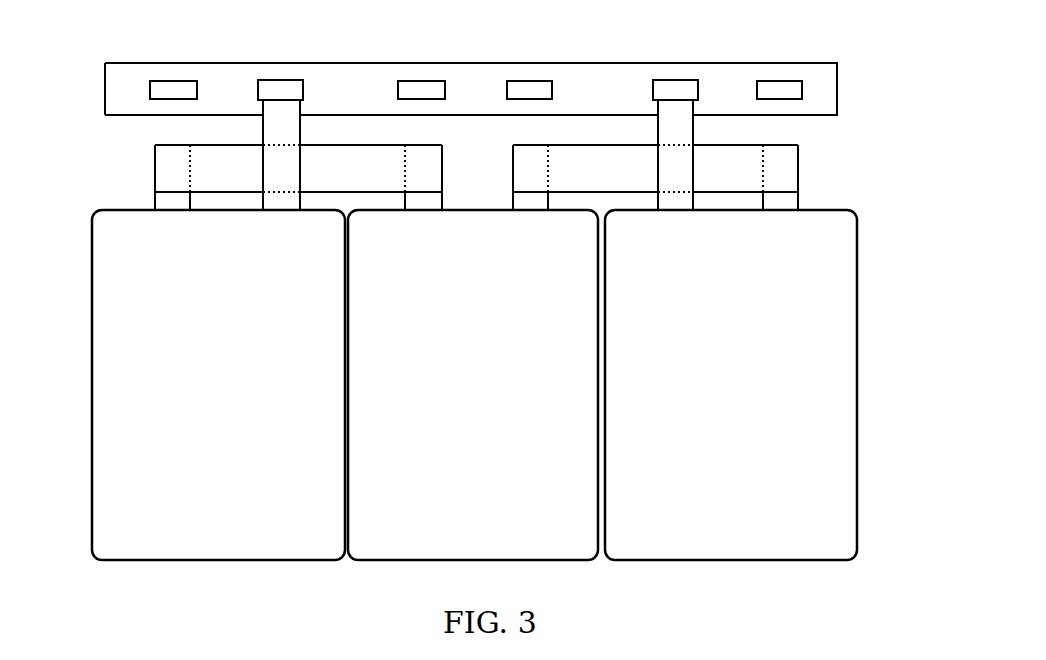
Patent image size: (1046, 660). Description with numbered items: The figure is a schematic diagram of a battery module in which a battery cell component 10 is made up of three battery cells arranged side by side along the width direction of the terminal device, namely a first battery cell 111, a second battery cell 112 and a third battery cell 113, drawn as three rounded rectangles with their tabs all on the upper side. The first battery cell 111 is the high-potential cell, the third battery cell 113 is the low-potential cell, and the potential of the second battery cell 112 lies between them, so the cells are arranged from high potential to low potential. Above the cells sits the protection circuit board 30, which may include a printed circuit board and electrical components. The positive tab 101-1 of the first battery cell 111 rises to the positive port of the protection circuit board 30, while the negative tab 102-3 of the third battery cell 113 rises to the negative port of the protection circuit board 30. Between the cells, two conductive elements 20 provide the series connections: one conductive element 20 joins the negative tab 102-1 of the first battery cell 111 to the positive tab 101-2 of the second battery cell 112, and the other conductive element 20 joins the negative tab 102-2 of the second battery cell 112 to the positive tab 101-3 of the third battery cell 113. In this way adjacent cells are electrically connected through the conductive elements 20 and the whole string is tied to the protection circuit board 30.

The battery cell component 10 is at (525, 385).
The first battery cell 111 is at (293, 275).
The second battery cell 112 is at (556, 265).
The third battery cell 113 is at (920, 496).
The conductive element 20 is at (217, 168).
The protection circuit board 30 is at (838, 83).
The positive tab of the first battery cell 101-1 is at (290, 128).
The positive tab of the second battery cell 101-2 is at (432, 200).
The positive tab of the third battery cell 101-3 is at (787, 202).
The negative tab of the first battery cell 102-1 is at (168, 200).
The negative tab of the second battery cell 102-2 is at (537, 203).
The negative tab of the third battery cell 102-3 is at (680, 127).